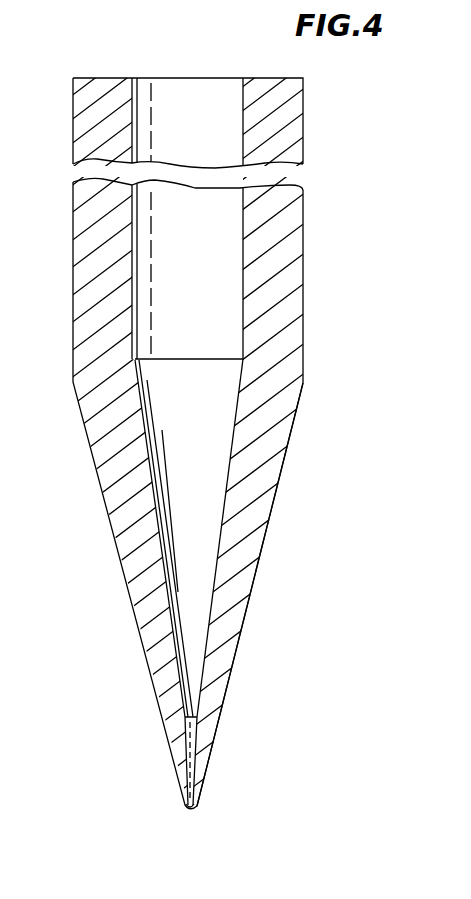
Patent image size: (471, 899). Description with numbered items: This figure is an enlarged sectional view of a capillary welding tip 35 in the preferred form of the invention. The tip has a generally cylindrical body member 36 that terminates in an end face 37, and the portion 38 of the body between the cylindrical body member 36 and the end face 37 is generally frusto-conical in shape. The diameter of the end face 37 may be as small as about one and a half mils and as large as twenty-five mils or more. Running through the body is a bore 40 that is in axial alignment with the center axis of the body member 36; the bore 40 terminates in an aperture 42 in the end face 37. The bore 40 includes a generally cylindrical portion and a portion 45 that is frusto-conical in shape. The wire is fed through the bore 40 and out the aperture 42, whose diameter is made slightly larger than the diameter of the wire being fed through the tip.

The capillary welding tip 35 is at (303, 252).
The body member 36 is at (292, 130).
The end face 37 is at (192, 808).
The frusto-conical portion 38 is at (243, 597).
The bore 40 is at (245, 347).
The aperture 42 is at (183, 802).
The frusto-conical bore portion 45 is at (205, 655).